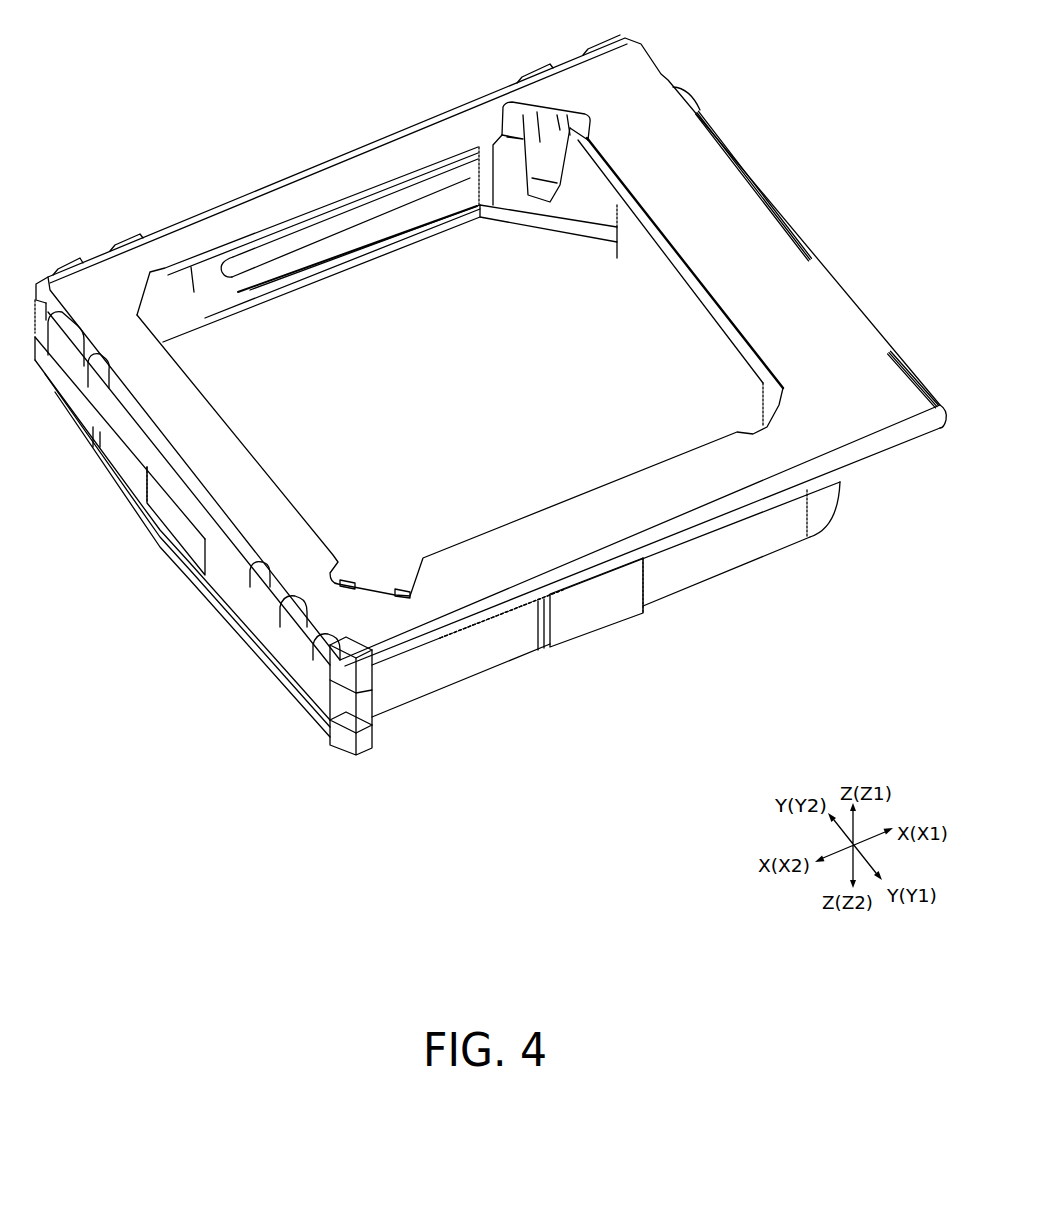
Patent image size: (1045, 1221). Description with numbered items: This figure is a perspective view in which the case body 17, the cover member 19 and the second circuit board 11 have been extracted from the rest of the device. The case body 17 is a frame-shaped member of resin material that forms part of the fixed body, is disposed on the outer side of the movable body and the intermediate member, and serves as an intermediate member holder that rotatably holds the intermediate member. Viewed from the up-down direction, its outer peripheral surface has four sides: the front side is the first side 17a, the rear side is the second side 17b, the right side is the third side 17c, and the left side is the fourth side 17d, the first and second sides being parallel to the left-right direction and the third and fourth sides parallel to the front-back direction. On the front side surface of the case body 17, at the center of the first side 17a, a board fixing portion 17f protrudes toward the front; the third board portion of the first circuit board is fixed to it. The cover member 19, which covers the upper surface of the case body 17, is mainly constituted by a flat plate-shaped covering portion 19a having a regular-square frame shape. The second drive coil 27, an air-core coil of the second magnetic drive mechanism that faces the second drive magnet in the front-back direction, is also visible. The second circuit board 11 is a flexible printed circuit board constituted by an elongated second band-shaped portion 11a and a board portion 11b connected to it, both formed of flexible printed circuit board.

The case body 17 is at (490, 400).
The first side 17a is at (606, 622).
The second side 17b is at (321, 215).
The third side 17c is at (805, 205).
The fourth side 17d is at (148, 557).
The board fixing portion 17f is at (598, 633).
The cover member 19 is at (511, 156).
The covering portion 19a is at (548, 180).
The second drive coil 27 is at (316, 283).
The second circuit board 11 is at (400, 663).
The second band-shaped portion 11a is at (303, 673).
The board portion 11b is at (440, 697).